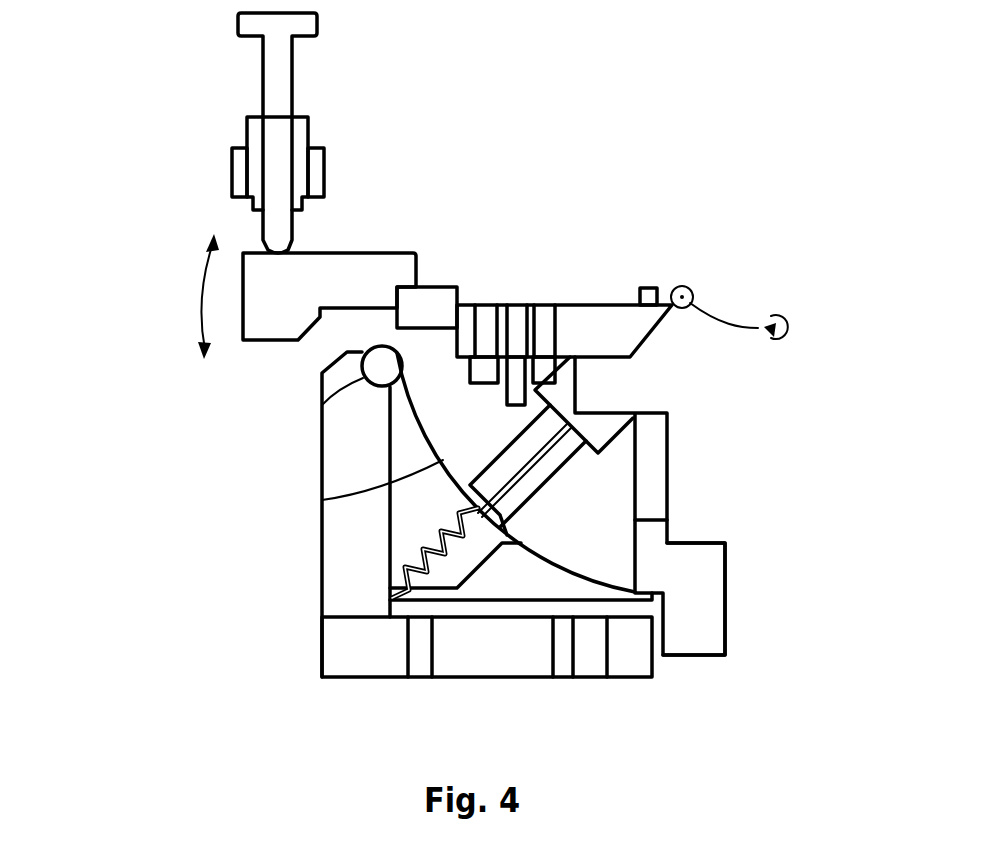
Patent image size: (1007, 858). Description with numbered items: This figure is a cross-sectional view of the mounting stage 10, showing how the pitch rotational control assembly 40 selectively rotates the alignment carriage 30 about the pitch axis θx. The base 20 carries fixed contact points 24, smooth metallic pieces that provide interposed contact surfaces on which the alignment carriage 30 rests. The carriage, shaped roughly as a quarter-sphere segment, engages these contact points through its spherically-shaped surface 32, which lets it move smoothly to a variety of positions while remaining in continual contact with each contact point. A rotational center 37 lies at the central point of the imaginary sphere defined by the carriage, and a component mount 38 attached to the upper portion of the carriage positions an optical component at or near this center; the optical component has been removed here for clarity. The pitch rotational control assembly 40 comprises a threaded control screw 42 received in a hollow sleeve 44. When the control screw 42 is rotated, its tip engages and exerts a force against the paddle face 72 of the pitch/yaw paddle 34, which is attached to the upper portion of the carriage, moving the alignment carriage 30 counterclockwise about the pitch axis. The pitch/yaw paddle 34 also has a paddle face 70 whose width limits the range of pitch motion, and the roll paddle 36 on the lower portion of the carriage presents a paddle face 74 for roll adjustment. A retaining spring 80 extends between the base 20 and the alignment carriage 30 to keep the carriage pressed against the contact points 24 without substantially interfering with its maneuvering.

The mounting stage 10 is at (142, 146).
The base 20 is at (296, 566).
The fixed contact points 24 is at (380, 368).
The alignment carriage 30 is at (618, 470).
The spherically-shaped surface 32 is at (437, 463).
The pitch/yaw paddle 34 is at (270, 330).
The roll paddle 36 is at (712, 627).
The rotational center 37 is at (686, 292).
The component mount 38 is at (597, 303).
The pitch rotational control assembly 40 is at (222, 93).
The control screw 42 is at (275, 72).
The hollow sleeve 44 is at (300, 133).
The paddle face 70 is at (316, 293).
The paddle face 72 is at (383, 257).
The paddle face 74 is at (679, 606).
The retaining spring 80 is at (470, 553).